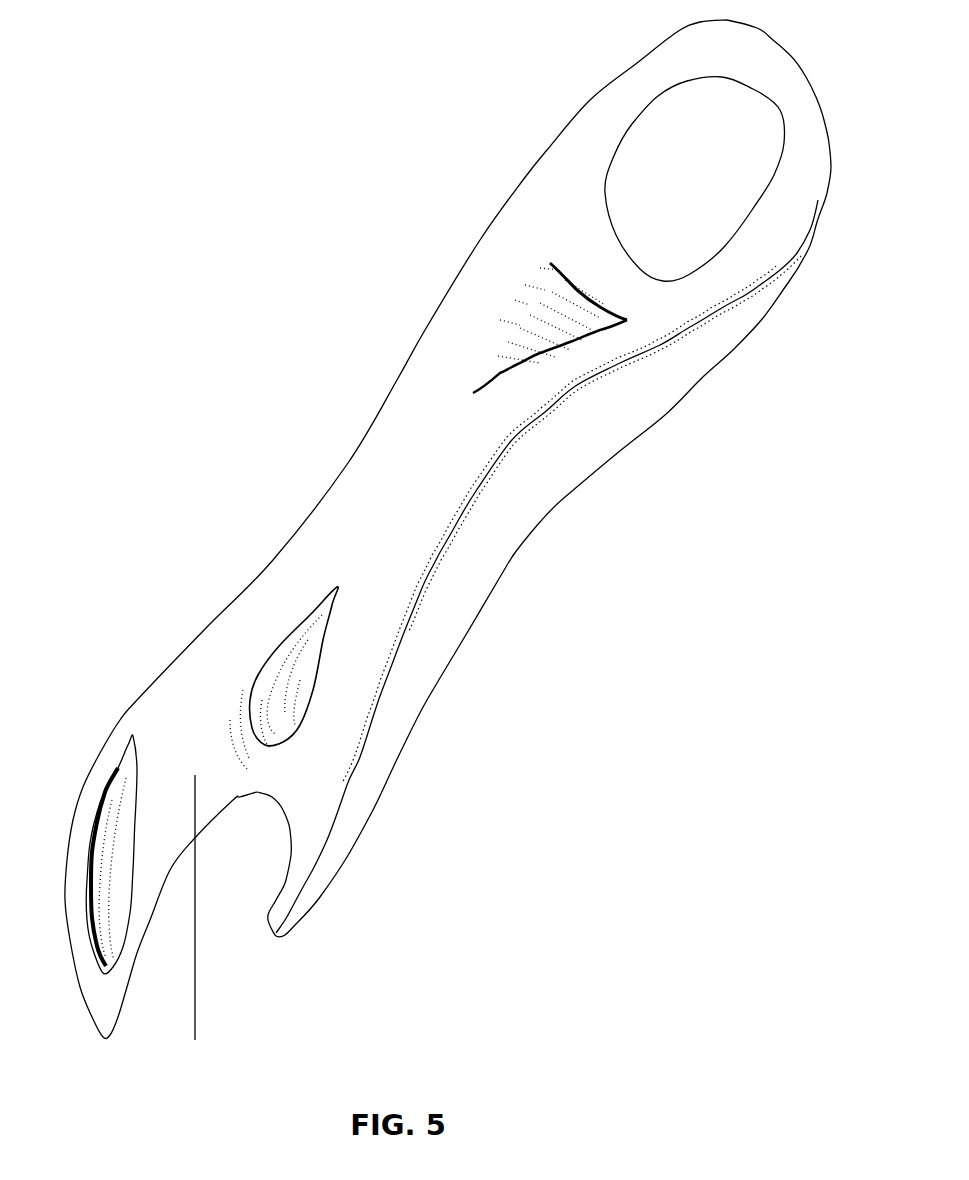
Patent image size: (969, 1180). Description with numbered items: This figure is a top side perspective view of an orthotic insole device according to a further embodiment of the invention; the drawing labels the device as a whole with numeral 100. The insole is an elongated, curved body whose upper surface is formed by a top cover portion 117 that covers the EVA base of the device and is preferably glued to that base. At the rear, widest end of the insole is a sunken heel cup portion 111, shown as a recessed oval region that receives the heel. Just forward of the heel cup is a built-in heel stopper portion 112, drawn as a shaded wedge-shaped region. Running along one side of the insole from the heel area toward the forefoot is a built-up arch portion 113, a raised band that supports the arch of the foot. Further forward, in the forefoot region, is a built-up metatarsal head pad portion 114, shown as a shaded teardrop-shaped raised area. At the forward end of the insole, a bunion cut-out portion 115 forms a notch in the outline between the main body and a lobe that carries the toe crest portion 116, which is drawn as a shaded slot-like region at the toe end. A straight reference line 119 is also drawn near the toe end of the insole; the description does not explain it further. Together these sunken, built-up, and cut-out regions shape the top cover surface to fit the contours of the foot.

The handle device 100 is at (423, 547).
The sunken heel cup portion 111 is at (673, 195).
The built-in heel stopper portion 112 is at (533, 315).
The built-up arch portion 113 is at (503, 517).
The built-up metatarsal head pad portion 114 is at (288, 692).
The bunion cut-out portion 115 is at (245, 848).
The toe crest portion 116 is at (122, 858).
The top cover portion 117 is at (368, 480).
The axis line 119 is at (189, 925).